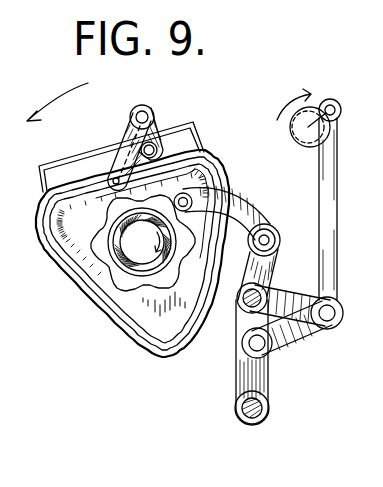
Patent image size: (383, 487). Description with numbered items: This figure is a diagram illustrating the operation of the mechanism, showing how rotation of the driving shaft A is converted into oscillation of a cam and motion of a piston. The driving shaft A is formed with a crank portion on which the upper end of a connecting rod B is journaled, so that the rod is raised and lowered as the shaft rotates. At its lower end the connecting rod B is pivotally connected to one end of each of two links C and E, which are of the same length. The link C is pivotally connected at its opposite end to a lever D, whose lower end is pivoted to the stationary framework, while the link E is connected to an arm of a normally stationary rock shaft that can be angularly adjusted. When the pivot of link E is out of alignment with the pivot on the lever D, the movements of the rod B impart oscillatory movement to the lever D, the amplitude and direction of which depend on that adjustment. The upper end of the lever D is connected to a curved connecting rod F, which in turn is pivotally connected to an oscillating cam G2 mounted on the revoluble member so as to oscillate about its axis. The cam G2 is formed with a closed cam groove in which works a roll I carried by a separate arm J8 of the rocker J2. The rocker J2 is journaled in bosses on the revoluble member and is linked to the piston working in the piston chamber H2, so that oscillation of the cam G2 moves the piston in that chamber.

The piston chamber H2 is at (81, 170).
The oscillating cam G2 is at (88, 258).
The separate arm J8 is at (122, 135).
The rocker J2 is at (145, 114).
The roll I is at (119, 187).
The curved connecting rod F is at (250, 216).
The driving shaft A is at (312, 128).
The connecting rod B is at (325, 223).
The link E is at (307, 291).
The link C is at (300, 330).
The lever D is at (243, 337).